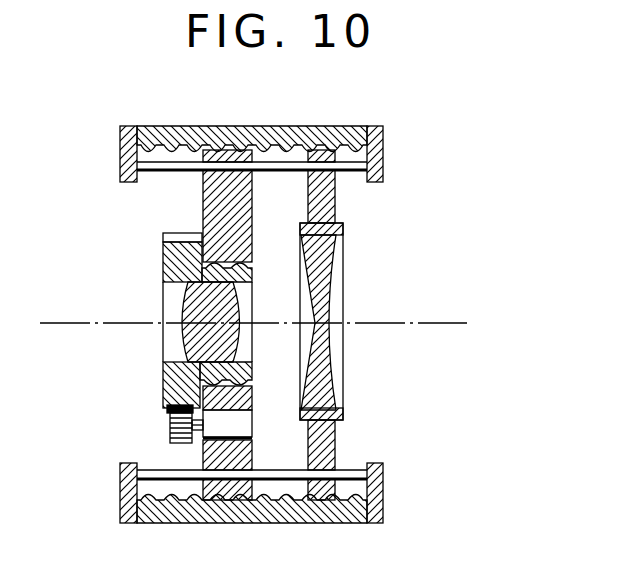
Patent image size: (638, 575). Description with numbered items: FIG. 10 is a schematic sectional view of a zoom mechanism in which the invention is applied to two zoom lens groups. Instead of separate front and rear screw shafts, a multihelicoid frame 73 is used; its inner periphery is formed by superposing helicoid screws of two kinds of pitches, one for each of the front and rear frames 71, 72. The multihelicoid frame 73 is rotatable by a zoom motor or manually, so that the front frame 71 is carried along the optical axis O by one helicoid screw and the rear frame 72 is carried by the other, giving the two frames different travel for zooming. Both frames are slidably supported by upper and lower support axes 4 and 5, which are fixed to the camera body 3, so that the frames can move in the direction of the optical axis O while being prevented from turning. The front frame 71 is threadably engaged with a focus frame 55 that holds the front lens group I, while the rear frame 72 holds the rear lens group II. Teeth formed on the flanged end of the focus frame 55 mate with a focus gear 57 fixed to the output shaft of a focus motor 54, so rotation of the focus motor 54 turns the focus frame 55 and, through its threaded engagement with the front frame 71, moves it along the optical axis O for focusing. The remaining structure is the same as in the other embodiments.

The camera body 3 is at (128, 147).
The upper support axis 4 is at (352, 168).
The lower support axis 5 is at (355, 472).
The focus motor 54 is at (245, 423).
The focus frame 55 is at (172, 263).
The focus gear 57 is at (175, 427).
The front frame 71 is at (207, 213).
The rear frame 72 is at (323, 200).
The multihelicoid frame 73 is at (260, 142).
The front lens group I is at (197, 306).
The rear lens group II is at (330, 285).
The optical axis O is at (455, 323).